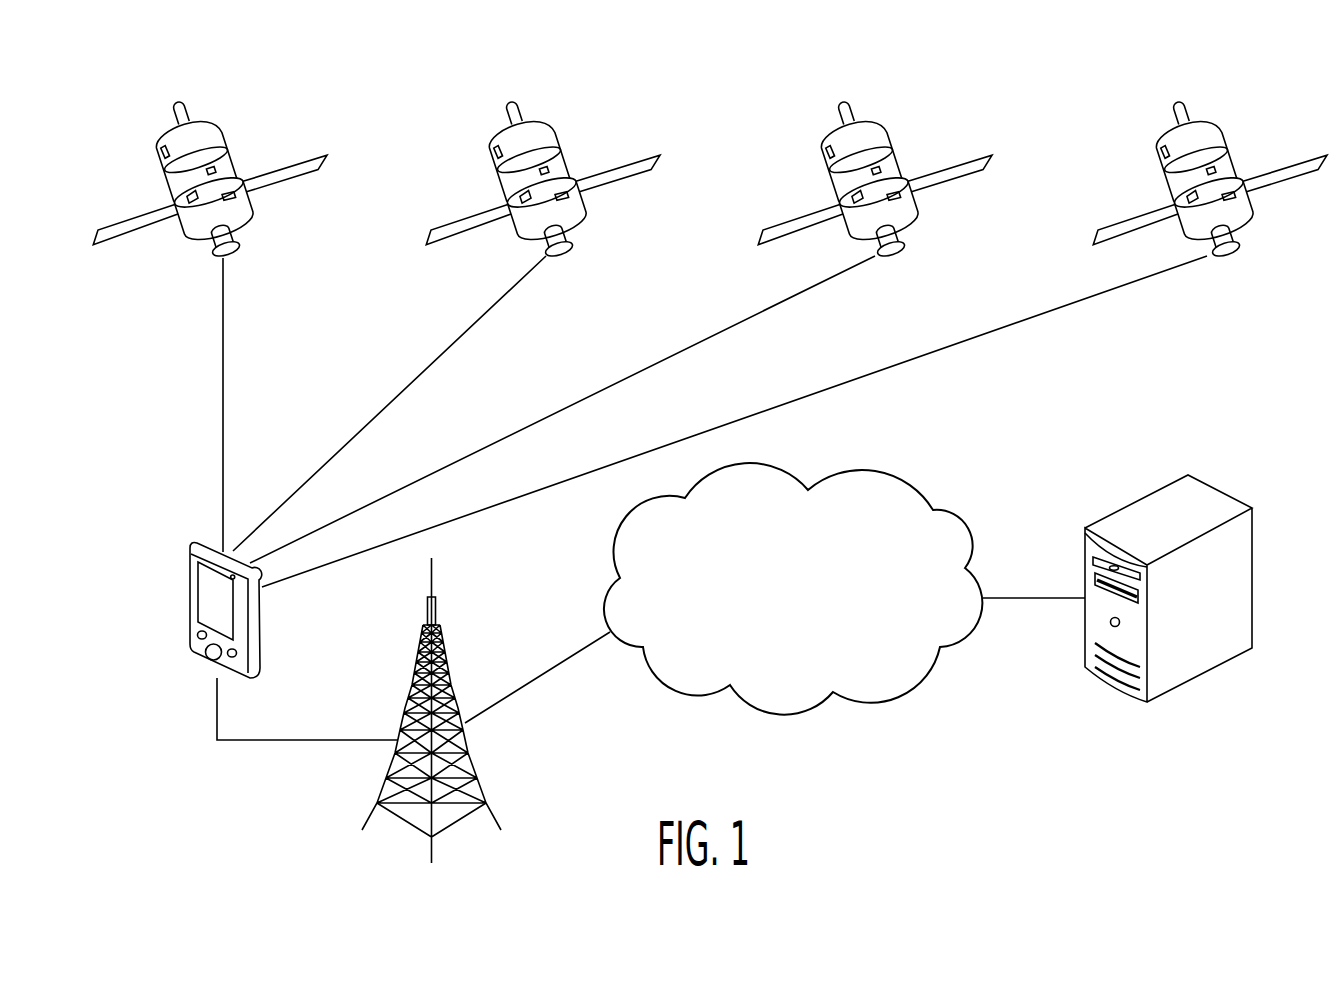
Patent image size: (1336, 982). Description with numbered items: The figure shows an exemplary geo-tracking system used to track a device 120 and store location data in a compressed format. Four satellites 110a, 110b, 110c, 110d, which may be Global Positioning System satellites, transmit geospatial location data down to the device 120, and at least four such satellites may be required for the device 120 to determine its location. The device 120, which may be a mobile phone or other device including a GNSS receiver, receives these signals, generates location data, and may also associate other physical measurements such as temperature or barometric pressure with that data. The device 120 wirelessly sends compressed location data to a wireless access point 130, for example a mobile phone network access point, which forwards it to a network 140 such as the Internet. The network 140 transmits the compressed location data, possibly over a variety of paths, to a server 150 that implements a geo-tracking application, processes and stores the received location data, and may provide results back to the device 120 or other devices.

The satellite 110a is at (157, 147).
The satellite 110b is at (490, 147).
The satellite 110c is at (822, 147).
The satellite 110d is at (1157, 147).
The device 120 is at (190, 562).
The wireless access point 130 is at (410, 682).
The network 140 is at (910, 478).
The server 150 is at (1125, 503).